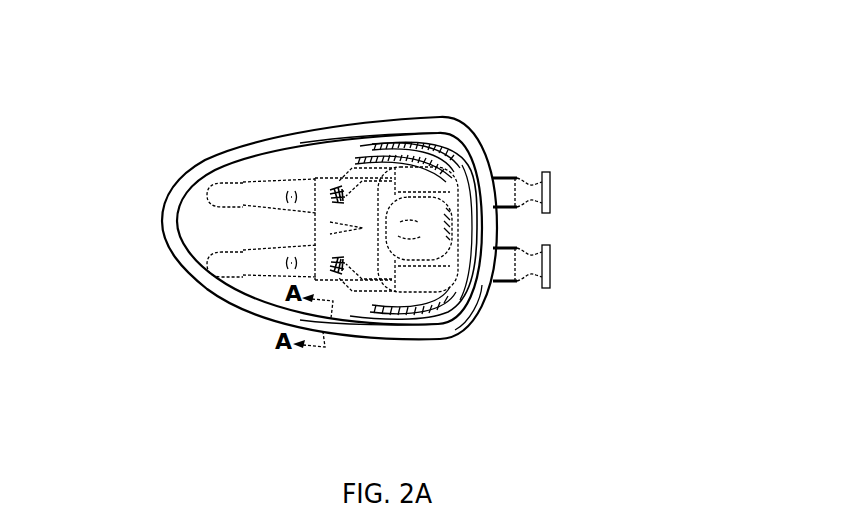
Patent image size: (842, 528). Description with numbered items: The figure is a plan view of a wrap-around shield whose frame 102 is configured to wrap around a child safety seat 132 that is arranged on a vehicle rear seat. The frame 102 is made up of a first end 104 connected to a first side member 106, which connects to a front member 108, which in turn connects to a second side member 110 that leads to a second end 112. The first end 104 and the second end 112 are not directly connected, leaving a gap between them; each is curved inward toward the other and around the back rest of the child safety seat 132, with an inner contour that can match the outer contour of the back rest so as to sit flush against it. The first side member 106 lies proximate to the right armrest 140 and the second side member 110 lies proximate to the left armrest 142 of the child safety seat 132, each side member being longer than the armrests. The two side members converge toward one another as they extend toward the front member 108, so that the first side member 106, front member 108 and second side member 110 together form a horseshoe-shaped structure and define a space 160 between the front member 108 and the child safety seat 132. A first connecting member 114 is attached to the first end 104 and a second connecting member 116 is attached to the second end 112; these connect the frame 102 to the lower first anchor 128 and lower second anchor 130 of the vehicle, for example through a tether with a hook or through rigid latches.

The frame 102 is at (244, 306).
The first end 104 is at (480, 145).
The first side member 106 is at (358, 137).
The front member 108 is at (176, 223).
The second side member 110 is at (356, 328).
The second end 112 is at (492, 303).
The first connecting member 114 is at (495, 212).
The second connecting member 116 is at (512, 280).
The lower first anchor 128 is at (552, 195).
The lower second anchor 130 is at (552, 268).
The child safety seat 132 is at (478, 231).
The right armrest 140 is at (405, 148).
The left armrest 142 is at (420, 313).
The space 160 is at (200, 238).